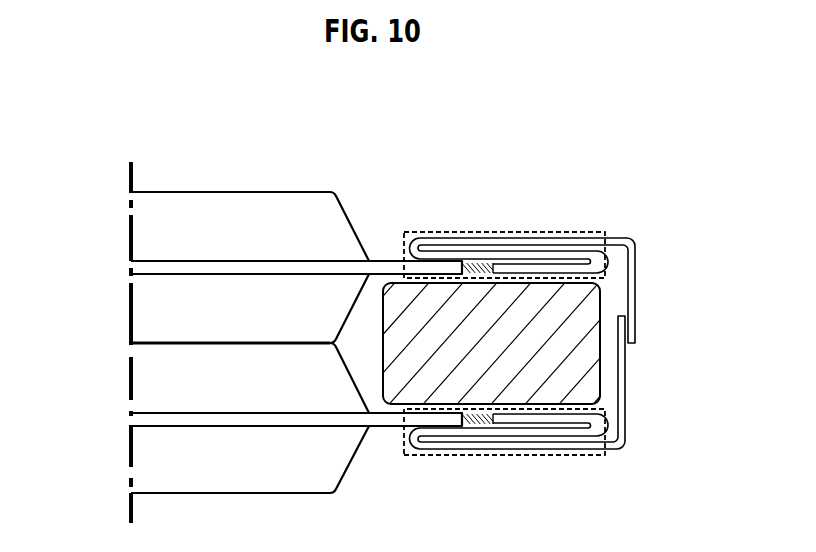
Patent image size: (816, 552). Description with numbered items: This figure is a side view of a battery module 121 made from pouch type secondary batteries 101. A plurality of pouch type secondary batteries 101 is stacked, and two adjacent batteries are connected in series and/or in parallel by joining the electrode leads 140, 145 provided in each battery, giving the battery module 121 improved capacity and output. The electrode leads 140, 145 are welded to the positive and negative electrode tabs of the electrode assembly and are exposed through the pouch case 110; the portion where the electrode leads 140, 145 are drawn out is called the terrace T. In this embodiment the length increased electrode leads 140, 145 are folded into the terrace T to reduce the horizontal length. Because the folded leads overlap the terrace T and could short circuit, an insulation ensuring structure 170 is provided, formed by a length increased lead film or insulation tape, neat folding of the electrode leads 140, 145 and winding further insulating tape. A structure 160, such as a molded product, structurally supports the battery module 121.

The pouch type secondary battery 101 is at (271, 335).
The pouch case 110 is at (292, 192).
The terrace T is at (382, 247).
The battery module 121 is at (511, 272).
The insulation ensuring structure 170 is at (479, 232).
The electrode lead 140 is at (635, 275).
The electrode lead 145 is at (626, 418).
The structure that structurally supports the battery module 160 is at (586, 368).